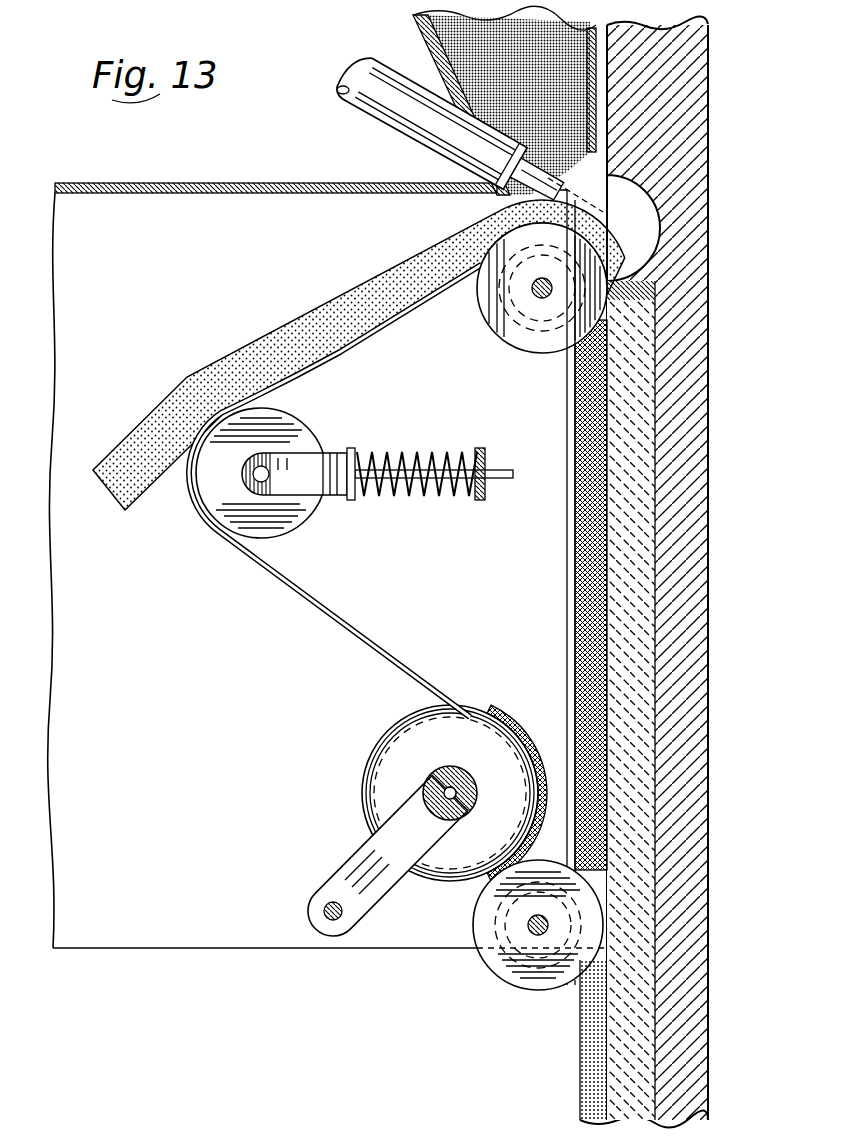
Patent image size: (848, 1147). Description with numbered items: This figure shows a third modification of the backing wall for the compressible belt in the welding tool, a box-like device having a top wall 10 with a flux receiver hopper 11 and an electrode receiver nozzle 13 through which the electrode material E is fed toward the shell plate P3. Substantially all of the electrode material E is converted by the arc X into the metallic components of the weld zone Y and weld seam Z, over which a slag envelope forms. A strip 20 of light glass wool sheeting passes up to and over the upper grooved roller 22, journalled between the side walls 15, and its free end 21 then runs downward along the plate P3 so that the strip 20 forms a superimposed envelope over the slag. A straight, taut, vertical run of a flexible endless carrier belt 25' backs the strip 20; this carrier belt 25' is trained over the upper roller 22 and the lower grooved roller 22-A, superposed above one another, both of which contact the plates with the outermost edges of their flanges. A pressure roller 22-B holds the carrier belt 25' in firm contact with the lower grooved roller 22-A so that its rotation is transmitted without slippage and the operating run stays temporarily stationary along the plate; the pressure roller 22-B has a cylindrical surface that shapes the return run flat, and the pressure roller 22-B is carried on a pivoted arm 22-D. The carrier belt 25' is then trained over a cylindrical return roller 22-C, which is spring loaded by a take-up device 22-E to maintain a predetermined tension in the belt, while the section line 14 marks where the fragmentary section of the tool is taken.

The top wall 10 is at (265, 183).
The flux receiver hopper 11 is at (418, 28).
The electrode receiver nozzle 13 is at (362, 112).
The electrode material E is at (552, 182).
The shell plate P3 is at (690, 131).
The arc X is at (642, 228).
The weld zone Y is at (637, 294).
The weld seam Z is at (643, 397).
The roller 22 is at (515, 342).
The side wall 15 is at (566, 418).
The take-up device 22-E is at (410, 452).
The strip 20 is at (113, 483).
The return roller 22-C is at (293, 522).
The bottom wall 14 is at (490, 553).
The carrier belt 25' is at (368, 573).
The pressure roller 22-B is at (368, 761).
The pivot arm 22-D is at (362, 857).
The lower grooved roller 22-A is at (520, 985).
The free end 21 is at (578, 1073).